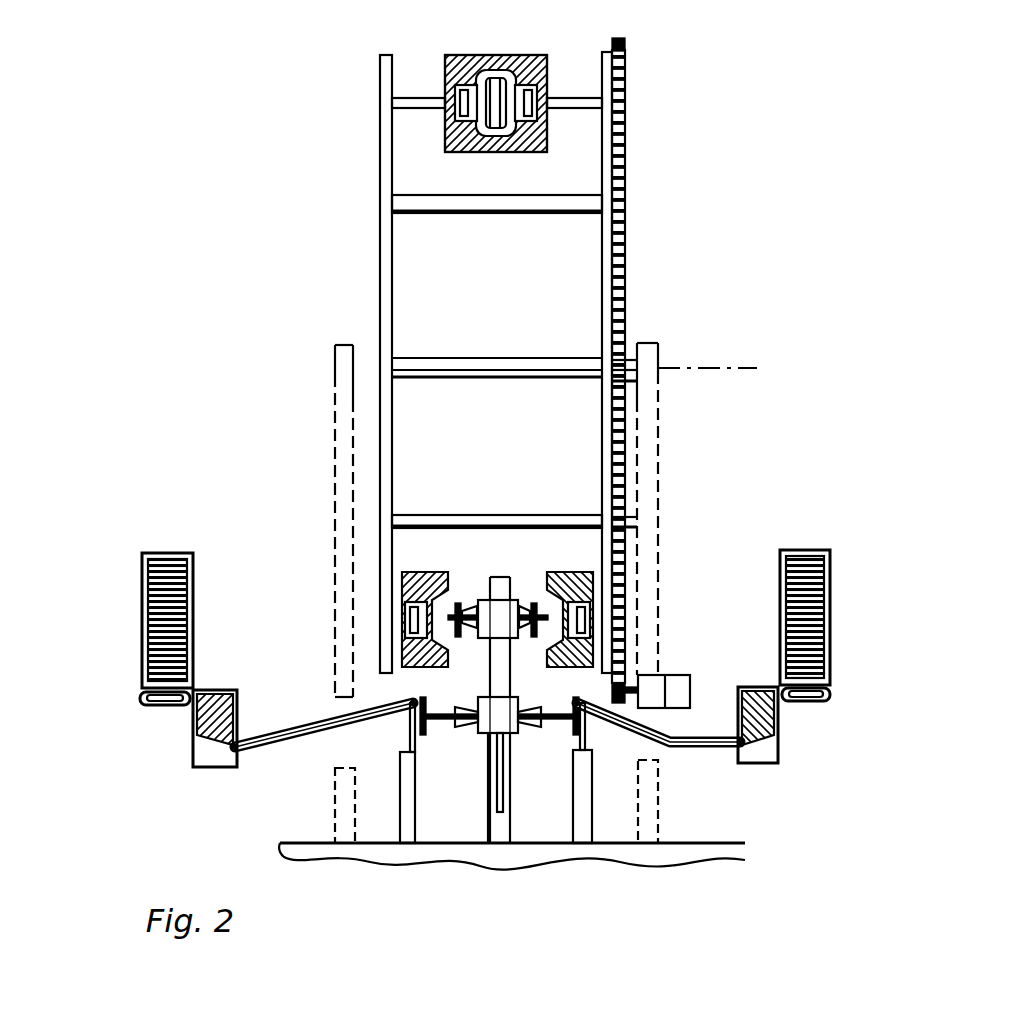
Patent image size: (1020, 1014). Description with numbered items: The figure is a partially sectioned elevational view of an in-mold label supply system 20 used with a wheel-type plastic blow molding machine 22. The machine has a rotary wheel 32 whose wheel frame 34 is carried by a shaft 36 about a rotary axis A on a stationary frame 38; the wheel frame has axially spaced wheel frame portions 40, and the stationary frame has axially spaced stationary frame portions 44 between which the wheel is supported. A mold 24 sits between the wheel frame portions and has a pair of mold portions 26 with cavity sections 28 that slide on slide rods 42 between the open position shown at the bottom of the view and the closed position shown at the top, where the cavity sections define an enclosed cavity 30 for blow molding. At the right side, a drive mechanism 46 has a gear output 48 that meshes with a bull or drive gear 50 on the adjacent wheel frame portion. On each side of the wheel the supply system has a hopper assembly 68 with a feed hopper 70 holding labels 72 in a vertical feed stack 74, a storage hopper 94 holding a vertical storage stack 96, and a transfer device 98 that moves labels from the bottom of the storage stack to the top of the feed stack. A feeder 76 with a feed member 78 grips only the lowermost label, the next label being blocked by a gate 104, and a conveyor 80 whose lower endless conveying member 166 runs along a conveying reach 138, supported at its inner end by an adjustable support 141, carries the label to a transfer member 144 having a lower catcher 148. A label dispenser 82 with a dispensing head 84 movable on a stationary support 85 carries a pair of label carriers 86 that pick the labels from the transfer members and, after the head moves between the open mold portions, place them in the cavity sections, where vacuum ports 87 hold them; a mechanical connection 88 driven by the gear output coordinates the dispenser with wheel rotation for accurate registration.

The in-mold label supply system 20 is at (755, 512).
The plastic blow molding machine 22 is at (690, 188).
The mold 24 is at (555, 48).
The mold portions 26 is at (450, 68).
The cavity sections 28 is at (500, 74).
The enclosed cavity 30 is at (465, 140).
The rotary wheel 32 is at (641, 90).
The wheel frame 34 is at (378, 256).
The shaft 36 is at (490, 358).
The stationary frame 38 is at (335, 360).
The wheel frame portions 40 is at (382, 228).
The slide rods 42 is at (405, 100).
The stationary frame portions 44 is at (335, 425).
The drive mechanism 46 is at (692, 632).
The gear output 48 is at (640, 645).
The bull gear 50 is at (622, 268).
The hopper assembly 68 is at (160, 742).
The feed hopper 70 is at (243, 706).
The labels 72 is at (445, 128).
The feed stack 74 is at (190, 718).
The feeder 76 is at (245, 768).
The feed member 78 is at (678, 757).
The conveyor 80 is at (310, 757).
The label dispenser 82 is at (427, 686).
The dispensing head 84 is at (489, 700).
The stationary support 85 is at (488, 793).
The label carriers 86 is at (518, 603).
The vacuum ports 87 is at (408, 622).
The mechanical connection 88 is at (606, 845).
The storage hopper 94 is at (140, 612).
The storage stack 96 is at (143, 562).
The transfer device 98 is at (150, 712).
The gate 104 is at (250, 716).
The conveying reach 138 is at (288, 752).
The adjustable supports 141 is at (490, 835).
The transfer members 144 is at (700, 890).
The lower catcher 148 is at (390, 828).
The lower endless conveying member 166 is at (642, 720).
The rotary axis A is at (690, 362).